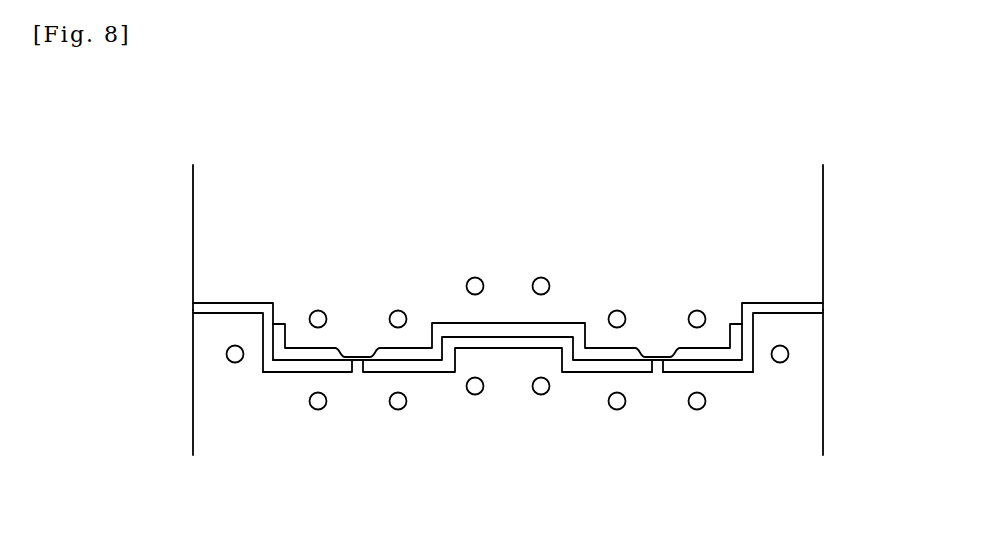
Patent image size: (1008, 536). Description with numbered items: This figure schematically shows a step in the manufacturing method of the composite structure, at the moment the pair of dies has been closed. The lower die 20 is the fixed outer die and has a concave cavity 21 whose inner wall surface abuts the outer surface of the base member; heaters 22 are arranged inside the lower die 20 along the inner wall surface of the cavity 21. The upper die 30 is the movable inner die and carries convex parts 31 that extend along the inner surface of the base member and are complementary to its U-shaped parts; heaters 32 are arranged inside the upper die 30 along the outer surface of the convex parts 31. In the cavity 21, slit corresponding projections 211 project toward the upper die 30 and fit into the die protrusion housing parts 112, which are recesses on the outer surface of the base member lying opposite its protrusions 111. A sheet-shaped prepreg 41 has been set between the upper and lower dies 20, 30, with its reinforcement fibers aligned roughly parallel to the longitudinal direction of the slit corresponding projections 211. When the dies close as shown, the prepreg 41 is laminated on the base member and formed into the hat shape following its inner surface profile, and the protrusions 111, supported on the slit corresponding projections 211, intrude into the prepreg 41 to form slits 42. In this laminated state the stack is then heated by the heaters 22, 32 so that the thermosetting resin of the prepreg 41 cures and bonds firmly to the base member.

The lower die 20 is at (818, 412).
The cavity 21 is at (747, 373).
The heaters 22 is at (477, 395).
The upper die 30 is at (818, 197).
The convex parts 31 is at (713, 337).
The heaters 32 is at (476, 277).
The prepreg 41 is at (283, 353).
The slits 42 is at (339, 348).
The protrusions 111 is at (357, 352).
The die protrusion housing parts 112 is at (658, 362).
The slit corresponding projections 211 is at (657, 352).